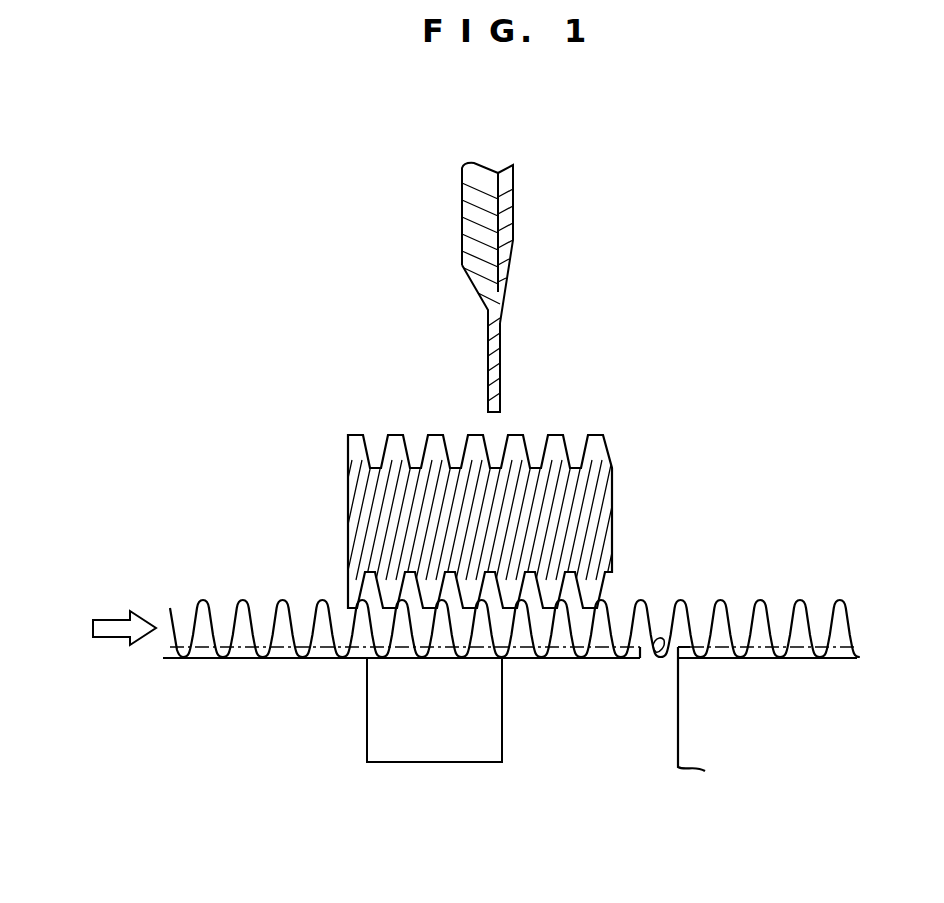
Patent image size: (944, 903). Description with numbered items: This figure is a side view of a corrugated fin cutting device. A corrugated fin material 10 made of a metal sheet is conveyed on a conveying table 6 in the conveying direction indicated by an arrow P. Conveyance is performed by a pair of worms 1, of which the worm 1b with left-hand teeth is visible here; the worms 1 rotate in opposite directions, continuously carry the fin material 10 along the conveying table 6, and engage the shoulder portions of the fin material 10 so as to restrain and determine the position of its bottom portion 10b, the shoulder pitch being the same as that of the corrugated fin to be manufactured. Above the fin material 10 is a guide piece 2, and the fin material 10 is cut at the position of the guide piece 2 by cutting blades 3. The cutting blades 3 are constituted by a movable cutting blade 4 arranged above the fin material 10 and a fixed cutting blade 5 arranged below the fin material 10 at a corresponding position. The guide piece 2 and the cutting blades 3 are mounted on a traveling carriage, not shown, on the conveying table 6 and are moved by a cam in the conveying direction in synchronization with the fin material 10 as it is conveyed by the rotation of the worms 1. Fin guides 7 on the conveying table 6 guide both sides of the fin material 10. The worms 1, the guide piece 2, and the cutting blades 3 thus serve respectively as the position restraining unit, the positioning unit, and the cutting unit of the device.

The worms 1 is at (563, 494).
The worm with left-hand teeth 1b is at (613, 527).
The guide piece 2 is at (462, 220).
The cutting blades 3 is at (530, 287).
The movable cutting blade 4 is at (508, 270).
The fixed cutting blade 5 is at (377, 712).
The conveying table 6 is at (197, 660).
The fin guides 7 is at (240, 660).
The fin material 10 is at (515, 650).
The bottom portion 10b is at (653, 653).
The arrow (conveying direction) P is at (109, 612).